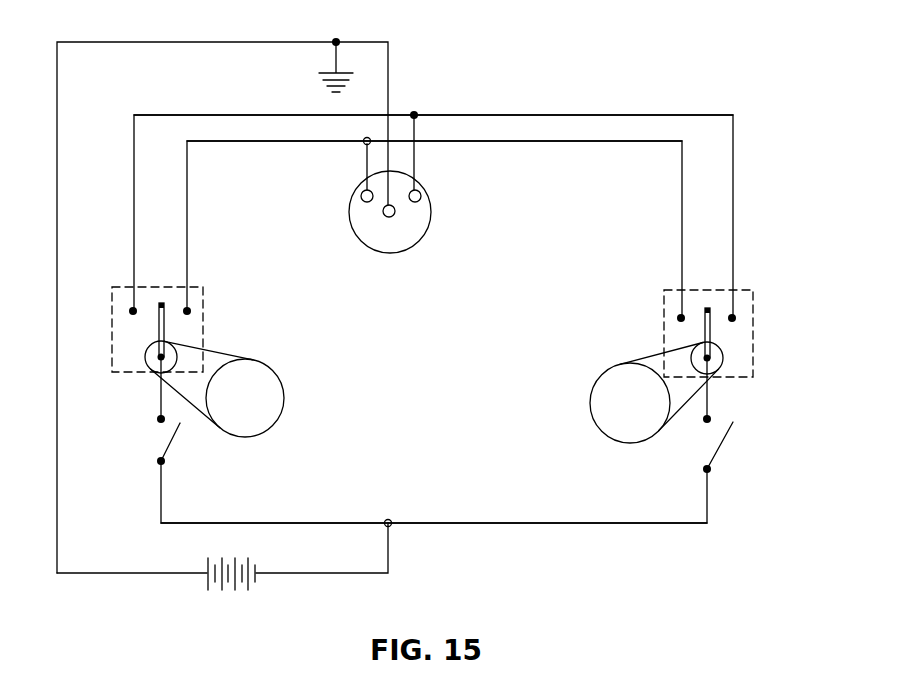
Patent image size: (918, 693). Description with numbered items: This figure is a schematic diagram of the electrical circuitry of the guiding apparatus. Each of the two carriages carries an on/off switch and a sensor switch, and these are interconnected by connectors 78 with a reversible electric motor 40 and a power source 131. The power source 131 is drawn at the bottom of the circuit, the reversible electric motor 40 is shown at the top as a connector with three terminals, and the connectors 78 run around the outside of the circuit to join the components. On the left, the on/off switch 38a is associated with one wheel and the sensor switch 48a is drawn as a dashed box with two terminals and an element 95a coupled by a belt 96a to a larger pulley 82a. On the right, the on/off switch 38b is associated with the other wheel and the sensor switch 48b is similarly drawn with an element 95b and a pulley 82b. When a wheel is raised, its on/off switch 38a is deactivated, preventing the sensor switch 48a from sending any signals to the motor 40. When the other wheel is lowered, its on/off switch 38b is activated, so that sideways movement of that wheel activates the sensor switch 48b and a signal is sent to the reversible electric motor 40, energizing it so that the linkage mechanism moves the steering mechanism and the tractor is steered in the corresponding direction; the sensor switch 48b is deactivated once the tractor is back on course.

The reversible electric motor 40 is at (360, 224).
The connectors 78 is at (681, 199).
The sensor switch 48a is at (120, 348).
The motor 95a is at (148, 360).
The belt 96a is at (222, 350).
The pulley 82a is at (273, 412).
The on/off switch 38a is at (176, 433).
The sensor switch 48b is at (742, 334).
The motor 95b is at (714, 360).
The pulley 82b is at (616, 432).
The on/off switch 38b is at (728, 433).
The power source 131 is at (207, 588).